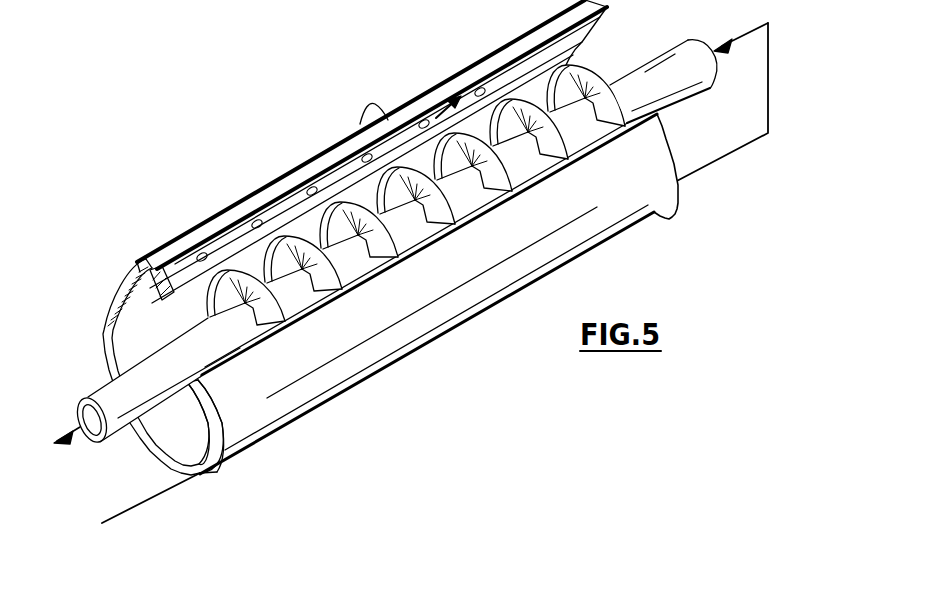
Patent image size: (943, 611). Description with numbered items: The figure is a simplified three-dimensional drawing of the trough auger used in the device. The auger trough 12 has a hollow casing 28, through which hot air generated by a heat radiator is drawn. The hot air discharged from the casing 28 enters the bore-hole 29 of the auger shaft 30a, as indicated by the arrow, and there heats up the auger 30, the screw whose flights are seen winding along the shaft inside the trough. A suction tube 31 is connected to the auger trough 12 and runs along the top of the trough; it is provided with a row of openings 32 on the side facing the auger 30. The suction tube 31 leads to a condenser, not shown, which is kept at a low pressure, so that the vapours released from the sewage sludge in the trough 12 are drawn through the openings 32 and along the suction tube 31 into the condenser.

The auger trough 12 is at (412, 372).
The hollow casing 28 is at (219, 458).
The bore-hole 29 is at (85, 416).
The auger 30 is at (500, 112).
The auger shaft 30a is at (663, 70).
The suction tube 31 is at (310, 170).
The openings 32 is at (365, 140).